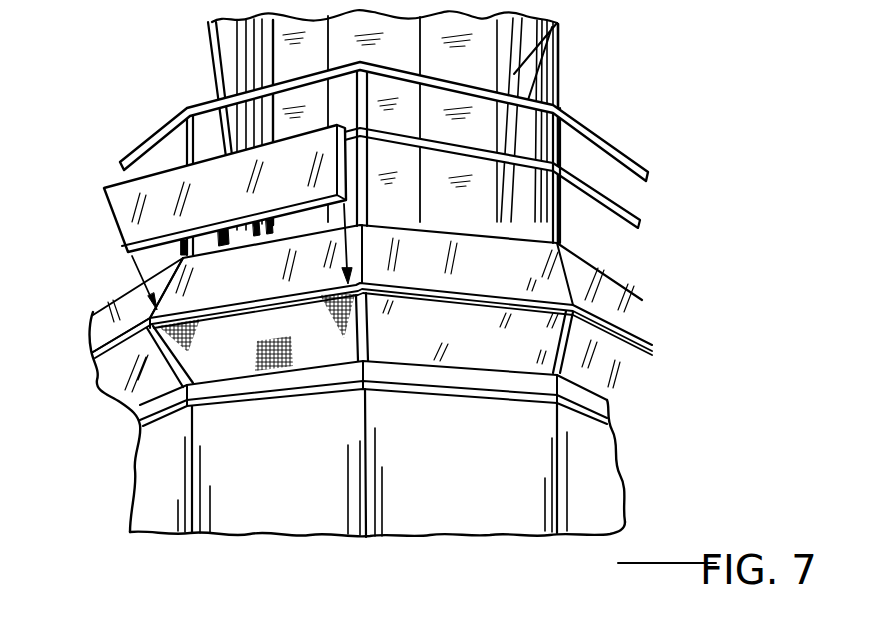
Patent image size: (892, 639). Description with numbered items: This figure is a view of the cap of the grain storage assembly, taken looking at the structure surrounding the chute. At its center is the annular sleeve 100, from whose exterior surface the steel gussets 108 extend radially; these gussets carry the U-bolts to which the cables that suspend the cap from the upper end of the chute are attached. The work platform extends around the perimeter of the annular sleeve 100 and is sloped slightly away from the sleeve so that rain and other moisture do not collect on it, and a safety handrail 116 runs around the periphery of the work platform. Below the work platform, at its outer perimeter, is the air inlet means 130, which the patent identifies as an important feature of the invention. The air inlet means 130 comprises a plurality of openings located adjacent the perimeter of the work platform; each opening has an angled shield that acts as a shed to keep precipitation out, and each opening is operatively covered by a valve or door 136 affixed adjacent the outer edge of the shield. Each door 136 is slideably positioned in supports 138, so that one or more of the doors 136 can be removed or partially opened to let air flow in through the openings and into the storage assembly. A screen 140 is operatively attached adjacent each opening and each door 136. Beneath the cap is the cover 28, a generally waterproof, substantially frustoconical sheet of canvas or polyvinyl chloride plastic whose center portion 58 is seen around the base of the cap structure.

The cover 28 is at (455, 481).
The center portion 58 is at (150, 473).
The annular sleeve 100 is at (220, 67).
The steel gussets 108 is at (557, 43).
The safety handrail 116 is at (145, 143).
The air inlet means 130 is at (102, 297).
The door 136 is at (110, 208).
The supports 138 is at (375, 332).
The screen 140 is at (200, 337).